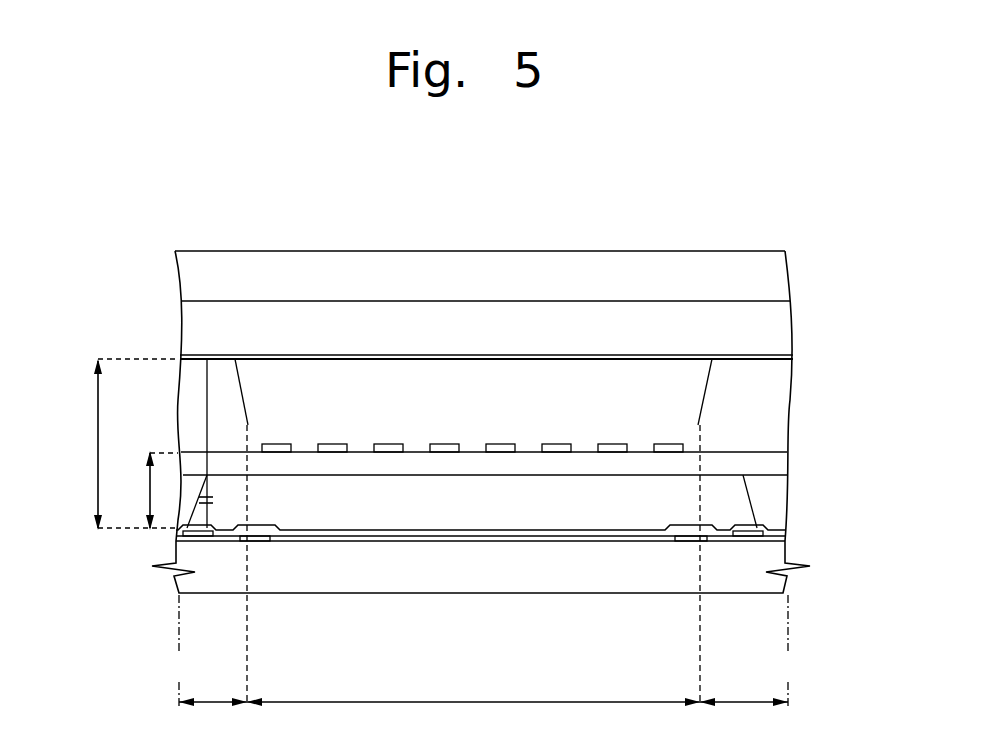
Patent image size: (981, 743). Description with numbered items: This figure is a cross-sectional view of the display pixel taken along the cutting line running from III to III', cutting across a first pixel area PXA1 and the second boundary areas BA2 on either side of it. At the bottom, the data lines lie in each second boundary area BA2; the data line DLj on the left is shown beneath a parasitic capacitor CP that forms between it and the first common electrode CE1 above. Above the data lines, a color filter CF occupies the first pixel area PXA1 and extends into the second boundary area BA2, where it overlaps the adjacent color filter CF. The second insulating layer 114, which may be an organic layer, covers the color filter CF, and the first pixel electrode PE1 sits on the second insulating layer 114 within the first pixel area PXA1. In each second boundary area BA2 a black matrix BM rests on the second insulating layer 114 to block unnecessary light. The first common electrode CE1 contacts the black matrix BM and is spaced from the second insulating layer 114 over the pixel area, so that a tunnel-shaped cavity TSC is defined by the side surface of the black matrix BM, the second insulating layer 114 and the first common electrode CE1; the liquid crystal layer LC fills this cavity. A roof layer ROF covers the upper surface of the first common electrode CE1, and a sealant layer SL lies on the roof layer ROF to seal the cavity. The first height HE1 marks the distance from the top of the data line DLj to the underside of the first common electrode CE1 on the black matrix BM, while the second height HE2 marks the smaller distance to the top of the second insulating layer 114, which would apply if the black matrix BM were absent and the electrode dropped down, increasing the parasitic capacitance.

The sealant layer SL is at (783, 273).
The roof layer ROF is at (783, 328).
The first common electrode CE1 is at (785, 356).
The black matrix BM is at (785, 408).
The second insulating layer 114 is at (783, 462).
The color filter CF is at (783, 498).
The liquid crystal layer LC is at (328, 378).
The tunnel-shaped cavity TSC is at (574, 378).
The first pixel electrode PE1 is at (502, 445).
The parasitic capacitor CP is at (219, 499).
The data line DLj is at (205, 537).
The first height HE1 is at (118, 444).
The second height HE2 is at (143, 490).
The second boundary area BA2 is at (483, 714).
The first pixel area PXA1 is at (473, 714).
The section line III is at (179, 651).
The section line III' is at (791, 651).